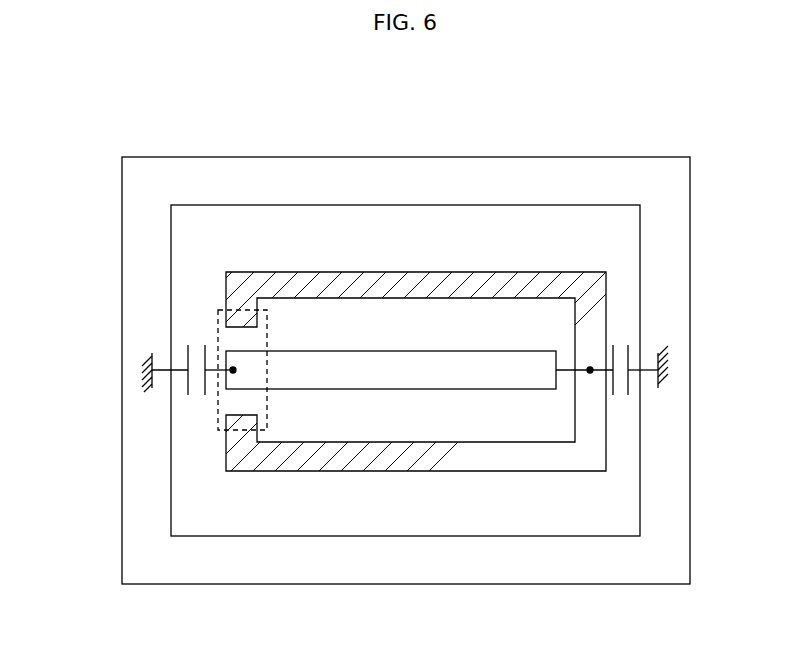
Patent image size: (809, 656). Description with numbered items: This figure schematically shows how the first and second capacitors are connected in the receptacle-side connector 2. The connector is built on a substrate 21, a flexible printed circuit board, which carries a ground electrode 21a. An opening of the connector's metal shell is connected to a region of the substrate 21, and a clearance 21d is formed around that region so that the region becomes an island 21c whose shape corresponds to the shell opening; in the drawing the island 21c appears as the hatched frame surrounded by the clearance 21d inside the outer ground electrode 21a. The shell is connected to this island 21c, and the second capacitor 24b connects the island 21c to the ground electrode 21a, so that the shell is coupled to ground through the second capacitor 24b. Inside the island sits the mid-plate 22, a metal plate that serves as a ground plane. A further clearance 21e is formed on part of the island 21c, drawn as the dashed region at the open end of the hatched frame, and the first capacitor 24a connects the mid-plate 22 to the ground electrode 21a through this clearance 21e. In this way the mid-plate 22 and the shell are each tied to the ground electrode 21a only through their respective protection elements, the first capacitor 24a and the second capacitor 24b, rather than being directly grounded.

The receptacle-side connector 2 is at (380, 136).
The substrate 21 is at (674, 229).
The ground electrode 21a is at (157, 352).
The island 21c is at (478, 272).
The clearance 21d is at (515, 245).
The clearance 21e is at (217, 408).
The mid-plate 22 is at (277, 352).
The first capacitor 24a is at (210, 347).
The second capacitor 24b is at (630, 347).